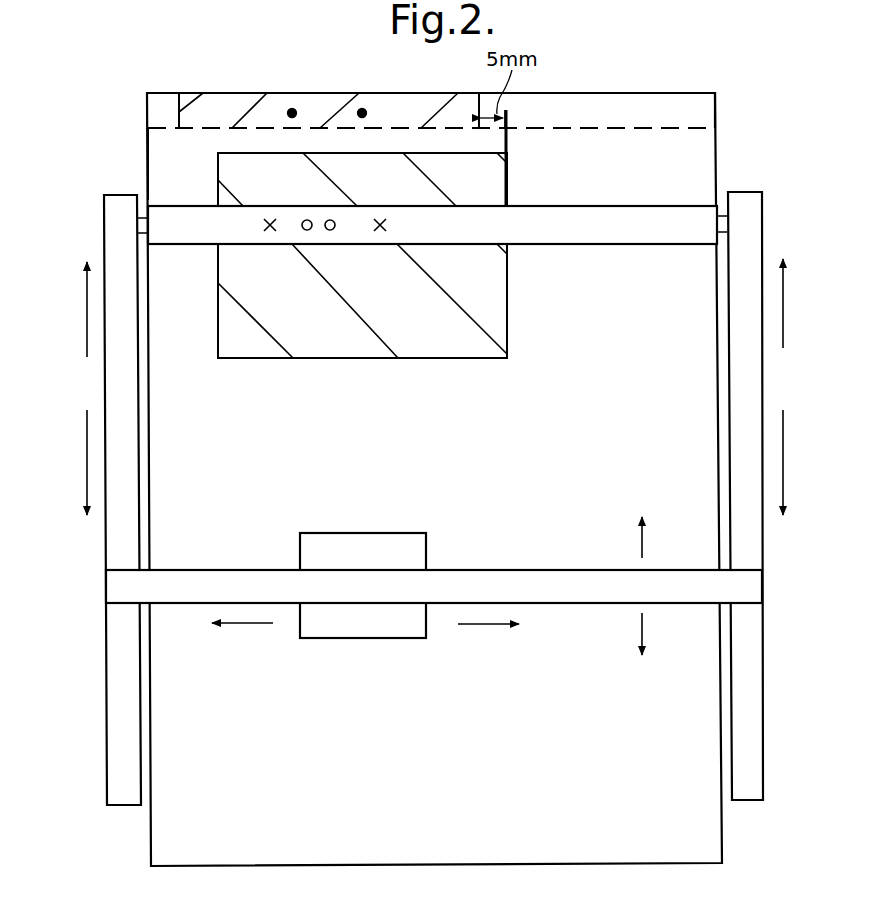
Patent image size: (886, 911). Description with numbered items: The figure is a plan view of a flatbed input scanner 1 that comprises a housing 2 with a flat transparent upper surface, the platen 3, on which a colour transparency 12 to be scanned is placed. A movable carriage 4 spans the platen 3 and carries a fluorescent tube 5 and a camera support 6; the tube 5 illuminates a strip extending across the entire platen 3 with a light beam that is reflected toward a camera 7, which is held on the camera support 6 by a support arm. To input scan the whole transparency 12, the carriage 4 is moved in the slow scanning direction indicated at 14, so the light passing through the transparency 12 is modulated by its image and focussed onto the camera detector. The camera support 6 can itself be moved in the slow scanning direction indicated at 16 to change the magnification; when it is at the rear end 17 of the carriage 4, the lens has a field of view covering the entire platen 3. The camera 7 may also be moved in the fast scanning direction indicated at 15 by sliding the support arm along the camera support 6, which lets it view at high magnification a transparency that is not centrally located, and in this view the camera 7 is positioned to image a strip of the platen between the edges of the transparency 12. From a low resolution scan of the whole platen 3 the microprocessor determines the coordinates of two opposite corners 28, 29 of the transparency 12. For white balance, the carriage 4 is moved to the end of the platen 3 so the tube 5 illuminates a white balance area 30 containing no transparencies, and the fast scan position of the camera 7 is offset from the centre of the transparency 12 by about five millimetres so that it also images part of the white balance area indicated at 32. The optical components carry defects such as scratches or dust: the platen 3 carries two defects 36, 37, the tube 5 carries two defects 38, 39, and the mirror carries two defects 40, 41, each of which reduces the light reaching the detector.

The flatbed input scanner 1 is at (222, 80).
The housing 2 is at (625, 93).
The platen 3 is at (162, 150).
The movable carriage 4 is at (104, 212).
The fluorescent tube 5 is at (618, 245).
The camera support 6 is at (571, 590).
The camera 7 is at (333, 527).
The colour transparency 12 is at (318, 335).
The slow scanning direction 14 is at (87, 308).
The fast scanning direction 15 is at (249, 623).
The slow scanning direction of camera support 16 is at (642, 545).
The rear end of carriage 17 is at (678, 794).
The corner of transparency 28 is at (218, 340).
The corner of transparency 29 is at (507, 150).
The white balance area 30 is at (693, 100).
The part of white balance area 32 is at (322, 96).
The defect on platen 36 is at (289, 110).
The defect on platen 37 is at (364, 110).
The defect on fluorescent tube 38 is at (268, 220).
The defect on fluorescent tube 39 is at (380, 220).
The defect on mirror 40 is at (304, 231).
The defect on mirror 41 is at (333, 231).